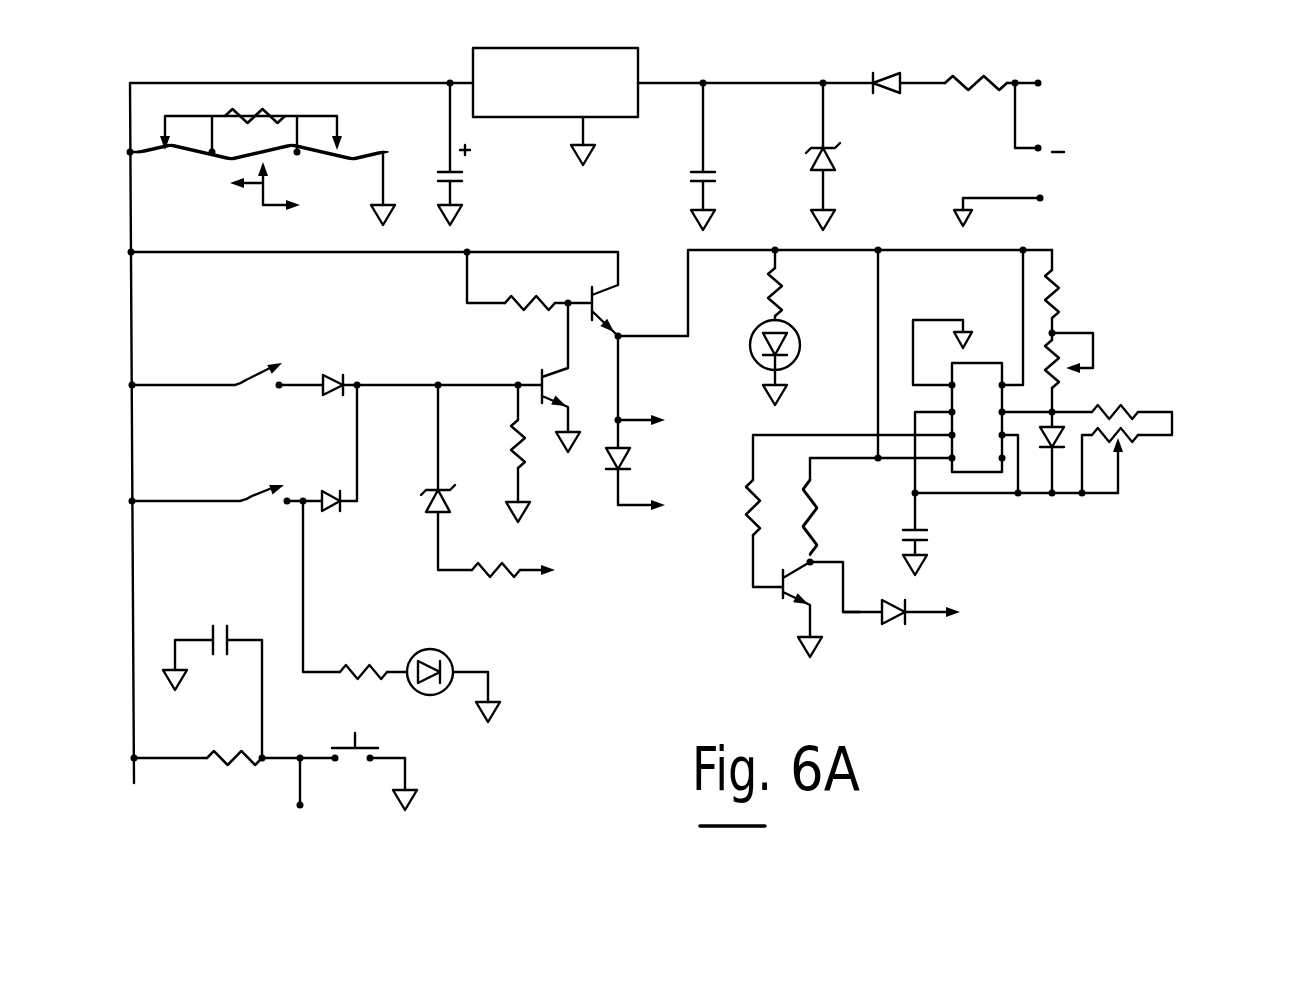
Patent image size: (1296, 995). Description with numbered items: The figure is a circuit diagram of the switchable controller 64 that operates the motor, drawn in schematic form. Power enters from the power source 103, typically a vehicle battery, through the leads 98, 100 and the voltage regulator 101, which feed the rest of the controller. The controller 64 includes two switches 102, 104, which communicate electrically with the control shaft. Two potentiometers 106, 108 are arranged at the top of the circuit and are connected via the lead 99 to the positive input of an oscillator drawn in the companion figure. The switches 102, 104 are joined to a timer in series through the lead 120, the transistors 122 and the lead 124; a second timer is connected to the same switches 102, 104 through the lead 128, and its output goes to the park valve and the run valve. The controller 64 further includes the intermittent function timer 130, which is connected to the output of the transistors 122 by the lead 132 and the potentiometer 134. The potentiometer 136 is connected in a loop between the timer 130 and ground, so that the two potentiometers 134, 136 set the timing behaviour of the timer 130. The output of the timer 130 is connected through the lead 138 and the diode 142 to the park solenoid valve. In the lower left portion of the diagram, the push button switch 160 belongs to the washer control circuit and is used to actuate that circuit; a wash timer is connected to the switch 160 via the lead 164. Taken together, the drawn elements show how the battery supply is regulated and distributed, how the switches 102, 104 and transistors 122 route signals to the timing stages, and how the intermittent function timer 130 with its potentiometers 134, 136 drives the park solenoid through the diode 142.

The switchable controller 64 is at (1175, 140).
The lead 98 is at (1015, 78).
The lead 99 is at (384, 168).
The lead 100 is at (1036, 152).
The voltage regulator 101 is at (639, 60).
The switch 102 is at (260, 373).
The power source 103 is at (1150, 73).
The switch 104 is at (272, 490).
The potentiometer 106 is at (176, 115).
The potentiometer 108 is at (314, 114).
The lead 120 is at (458, 383).
The transistors 122 is at (540, 370).
The lead 124 is at (729, 252).
The lead 128 is at (632, 420).
The intermittent function timer 130 is at (985, 466).
The lead 132 is at (1023, 283).
The potentiometer 134 is at (1083, 335).
The potentiometer 136 is at (1102, 495).
The lead 138 is at (858, 613).
The diode 142 is at (887, 597).
The push button switch 160 is at (343, 750).
The lead 164 is at (300, 787).